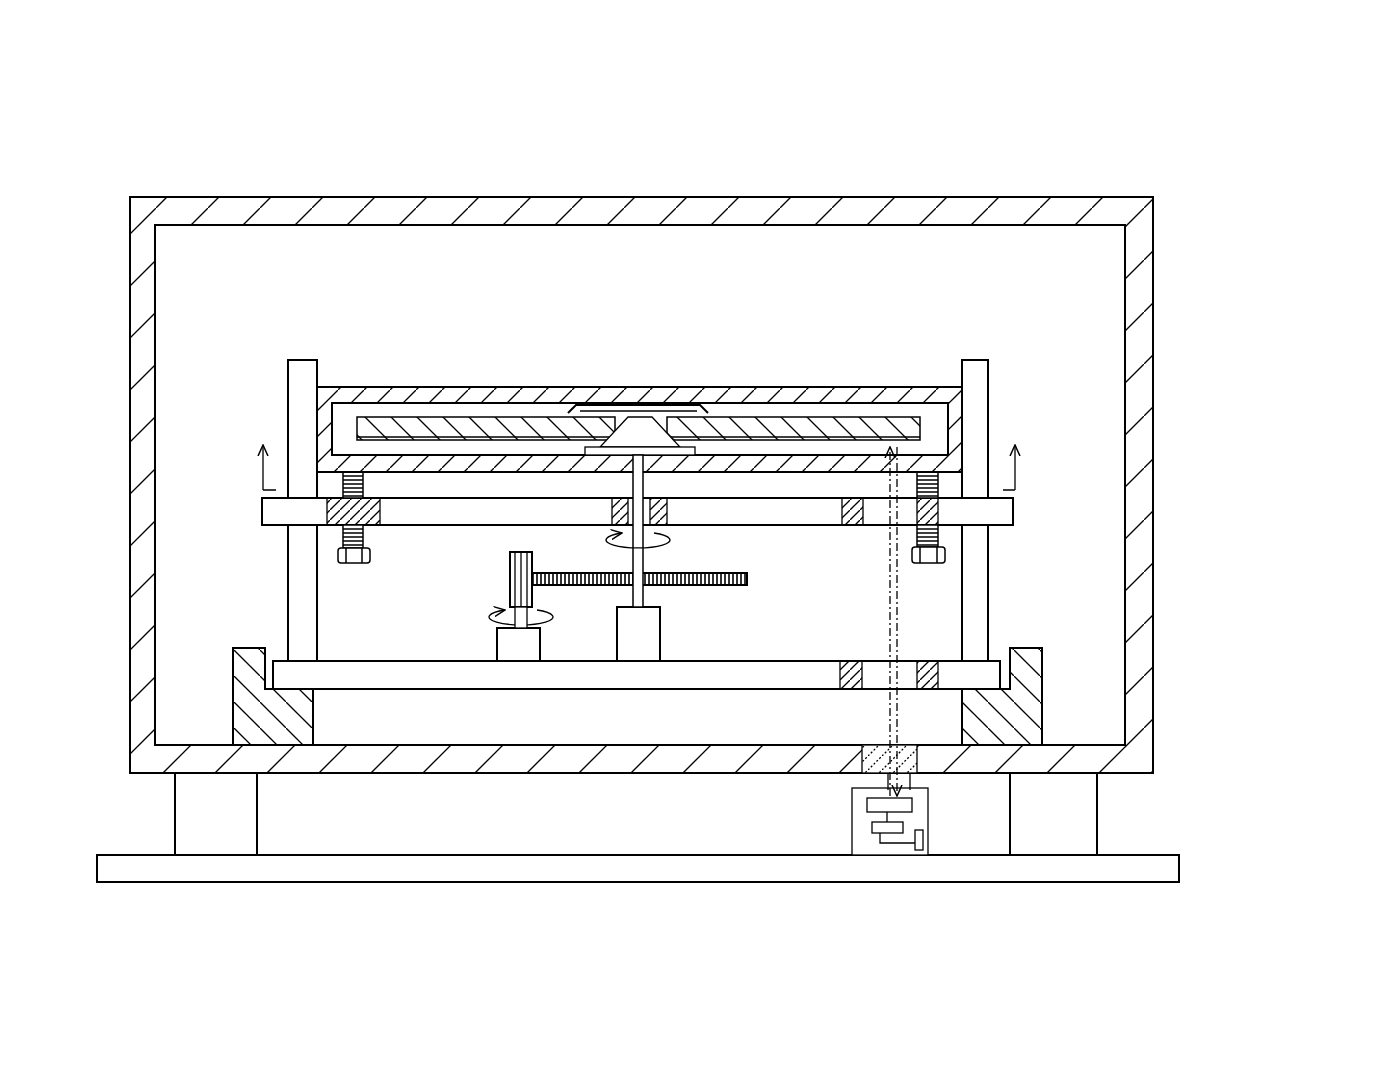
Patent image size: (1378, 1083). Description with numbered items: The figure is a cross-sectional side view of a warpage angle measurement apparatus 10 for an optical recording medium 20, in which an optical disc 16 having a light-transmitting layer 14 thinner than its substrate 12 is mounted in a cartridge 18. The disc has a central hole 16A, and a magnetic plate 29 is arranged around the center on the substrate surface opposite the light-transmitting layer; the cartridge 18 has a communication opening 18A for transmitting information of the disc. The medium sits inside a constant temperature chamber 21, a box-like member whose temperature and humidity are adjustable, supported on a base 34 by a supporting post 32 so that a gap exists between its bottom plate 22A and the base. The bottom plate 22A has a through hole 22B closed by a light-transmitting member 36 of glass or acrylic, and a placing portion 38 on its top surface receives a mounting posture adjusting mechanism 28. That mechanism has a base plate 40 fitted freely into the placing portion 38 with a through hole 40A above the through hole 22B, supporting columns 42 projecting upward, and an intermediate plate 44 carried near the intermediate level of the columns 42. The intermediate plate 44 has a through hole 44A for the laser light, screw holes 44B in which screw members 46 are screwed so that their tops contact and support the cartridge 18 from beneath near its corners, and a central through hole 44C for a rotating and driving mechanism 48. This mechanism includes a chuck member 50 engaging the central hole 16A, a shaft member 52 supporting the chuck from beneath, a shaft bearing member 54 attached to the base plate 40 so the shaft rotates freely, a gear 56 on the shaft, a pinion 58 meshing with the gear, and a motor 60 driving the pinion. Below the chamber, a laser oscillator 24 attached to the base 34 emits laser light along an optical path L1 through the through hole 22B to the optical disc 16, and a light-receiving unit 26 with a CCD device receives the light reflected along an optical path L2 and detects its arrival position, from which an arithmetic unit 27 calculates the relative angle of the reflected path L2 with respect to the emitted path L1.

The warpage angle measurement apparatus 10 is at (668, 103).
The substrate 12 is at (728, 422).
The light-transmitting layer 14 is at (733, 442).
The optical disc 16 is at (831, 409).
The central hole 16A is at (636, 416).
The cartridge 18 is at (366, 387).
The communication opening 18A is at (550, 473).
The optical recording medium 20 is at (613, 333).
The constant temperature chamber 21 is at (753, 196).
The bottom plate 22A is at (1085, 750).
The through hole 22B is at (928, 797).
The laser oscillator 24 is at (870, 828).
The light-receiving unit 26 is at (867, 805).
The arithmetic unit 27 is at (927, 841).
The mounting posture adjusting mechanism 28 is at (1037, 502).
The magnetic plate 29 is at (590, 406).
The supporting post 32 is at (1099, 818).
The base 34 is at (1166, 854).
The light-transmitting member 36 is at (880, 743).
The placing portion 38 is at (233, 672).
The base plate 40 is at (387, 668).
The through hole 40A is at (878, 664).
The supporting columns 42 is at (288, 363).
The intermediate plate 44 is at (264, 505).
The through hole 44A is at (868, 500).
The screw holes 44B is at (366, 527).
The through hole 44C is at (634, 497).
The screw members 46 is at (364, 477).
The rotating and driving mechanism 48 is at (465, 601).
The chuck member 50 is at (660, 449).
The shaft member 52 is at (644, 553).
The shaft bearing member 54 is at (661, 643).
The gear 56 is at (588, 573).
The pinion 58 is at (510, 562).
The motor 60 is at (541, 642).
The optical path of emitted laser light L1 is at (889, 620).
The optical path of reflected laser light L2 is at (898, 620).